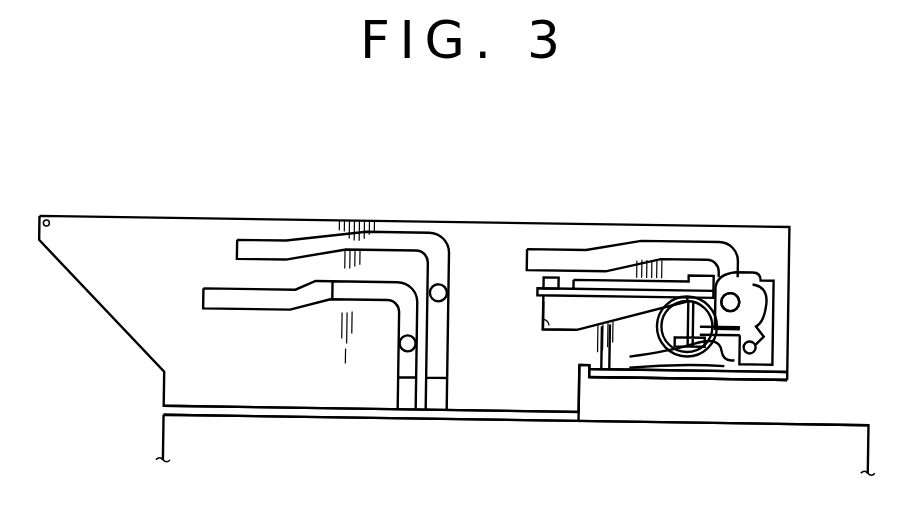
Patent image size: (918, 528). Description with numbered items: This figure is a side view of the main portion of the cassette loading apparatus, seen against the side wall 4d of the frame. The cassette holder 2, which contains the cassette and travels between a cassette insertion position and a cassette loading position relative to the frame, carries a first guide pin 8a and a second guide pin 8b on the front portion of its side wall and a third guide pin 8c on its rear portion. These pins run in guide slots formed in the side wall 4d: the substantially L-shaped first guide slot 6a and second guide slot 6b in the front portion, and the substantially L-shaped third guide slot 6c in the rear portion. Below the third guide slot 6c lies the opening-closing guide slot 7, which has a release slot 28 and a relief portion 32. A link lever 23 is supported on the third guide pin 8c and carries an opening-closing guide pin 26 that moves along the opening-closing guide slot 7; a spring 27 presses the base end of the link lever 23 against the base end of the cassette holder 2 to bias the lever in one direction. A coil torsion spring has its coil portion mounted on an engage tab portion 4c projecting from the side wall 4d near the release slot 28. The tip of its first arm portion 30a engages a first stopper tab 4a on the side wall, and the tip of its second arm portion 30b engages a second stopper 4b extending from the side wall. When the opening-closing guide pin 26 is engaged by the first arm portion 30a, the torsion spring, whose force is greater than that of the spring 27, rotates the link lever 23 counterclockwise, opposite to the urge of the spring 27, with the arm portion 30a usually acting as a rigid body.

The cassette holder 2 is at (436, 370).
The first stopper tab 4a is at (563, 278).
The second stopper 4b is at (625, 368).
The engage tab portion 4c is at (685, 346).
The side wall 4d is at (160, 234).
The first guide slot 6a is at (236, 301).
The second guide slot 6b is at (307, 250).
The third guide slot 6c is at (657, 245).
The opening-closing guide slot 7 is at (618, 287).
The first guide pin 8a is at (401, 344).
The second guide pin 8b is at (447, 290).
The third guide pin 8c is at (733, 289).
The link lever 23 is at (725, 336).
The opening-closing guide pin 26 is at (758, 343).
The spring 27 is at (768, 279).
The release slot 28 is at (768, 298).
The first arm portion 30a is at (578, 295).
The second arm portion 30b is at (650, 374).
The relief portion 32 is at (553, 322).